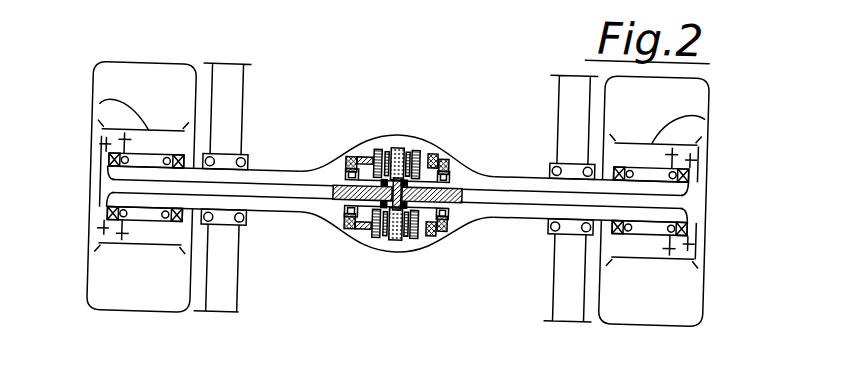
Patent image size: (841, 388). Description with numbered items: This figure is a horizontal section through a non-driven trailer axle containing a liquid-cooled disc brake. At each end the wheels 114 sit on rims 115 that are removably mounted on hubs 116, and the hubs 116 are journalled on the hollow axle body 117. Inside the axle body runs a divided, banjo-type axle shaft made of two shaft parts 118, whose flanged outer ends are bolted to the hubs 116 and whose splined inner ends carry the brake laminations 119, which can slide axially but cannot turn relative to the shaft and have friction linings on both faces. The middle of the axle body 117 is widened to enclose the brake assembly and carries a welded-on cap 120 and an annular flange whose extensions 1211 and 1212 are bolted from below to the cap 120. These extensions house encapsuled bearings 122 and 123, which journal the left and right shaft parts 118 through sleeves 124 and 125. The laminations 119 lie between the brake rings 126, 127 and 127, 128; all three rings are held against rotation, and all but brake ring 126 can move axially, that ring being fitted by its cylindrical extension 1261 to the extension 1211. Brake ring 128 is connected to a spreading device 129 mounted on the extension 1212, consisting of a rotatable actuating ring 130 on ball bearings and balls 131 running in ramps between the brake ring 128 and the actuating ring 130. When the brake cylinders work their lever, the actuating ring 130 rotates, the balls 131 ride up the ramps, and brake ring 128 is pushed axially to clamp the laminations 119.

The wheels 114 is at (140, 87).
The rims 115 is at (94, 110).
The hubs 116 is at (145, 160).
The hollow axle body 117 is at (261, 174).
The shaft parts 118 is at (281, 194).
The laminations 119 is at (405, 242).
The cap 120 is at (367, 140).
The extension of the annular flange 1211 is at (346, 143).
The extension of the annular flange 1212 is at (480, 146).
The encapsuled bearing 122 is at (341, 230).
The encapsuled bearing 123 is at (448, 230).
The sleeve 124 is at (343, 216).
The sleeve 125 is at (456, 214).
The brake ring 126 is at (378, 251).
The cylindrical extension 1261 is at (363, 241).
The brake ring 127 is at (396, 149).
The brake ring 128 is at (423, 245).
The spreading device 129 is at (413, 243).
The actuating ring 130 is at (434, 158).
The balls 131 is at (421, 153).